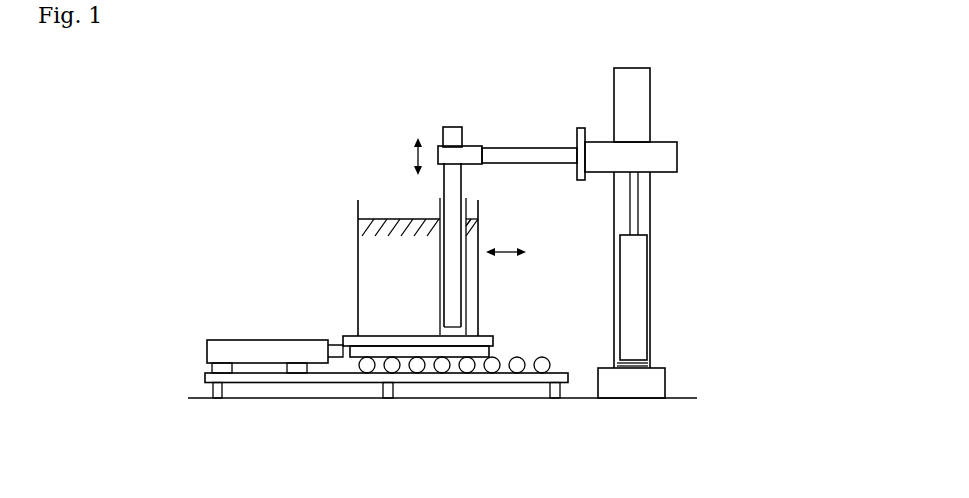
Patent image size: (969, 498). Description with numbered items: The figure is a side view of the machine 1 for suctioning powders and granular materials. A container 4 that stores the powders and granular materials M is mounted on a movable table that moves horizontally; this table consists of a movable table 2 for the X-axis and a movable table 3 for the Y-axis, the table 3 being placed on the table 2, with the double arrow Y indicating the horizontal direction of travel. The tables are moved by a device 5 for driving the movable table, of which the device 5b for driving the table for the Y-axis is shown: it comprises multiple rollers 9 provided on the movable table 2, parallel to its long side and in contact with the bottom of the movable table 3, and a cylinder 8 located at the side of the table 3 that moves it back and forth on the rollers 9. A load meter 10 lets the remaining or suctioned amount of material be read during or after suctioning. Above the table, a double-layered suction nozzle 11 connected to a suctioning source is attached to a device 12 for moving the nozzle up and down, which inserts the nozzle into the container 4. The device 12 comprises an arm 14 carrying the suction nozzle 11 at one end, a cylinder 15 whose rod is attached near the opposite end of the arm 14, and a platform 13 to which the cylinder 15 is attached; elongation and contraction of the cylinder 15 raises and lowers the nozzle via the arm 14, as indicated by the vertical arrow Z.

The machine for suctioning powders and granular materials 1 is at (322, 118).
The movable table for the X-axis 2 is at (292, 380).
The movable table for the Y-axis 3 is at (367, 355).
The container 4 is at (358, 250).
The device for driving the movable table 5 is at (187, 417).
The device for driving the movable table for the Y-axis 5b is at (169, 385).
The cylinder 8 is at (207, 340).
The rollers 9 is at (520, 357).
The load meter 10 is at (353, 337).
The suction nozzle 11 is at (452, 128).
The device for moving the suction nozzle up and down 12 is at (729, 185).
The platform 13 is at (645, 120).
The arm 14 is at (509, 146).
The cylinder 15 is at (637, 300).
The powders and granular materials M is at (397, 320).
The Z direction Z is at (405, 156).
The Y direction Y is at (506, 238).